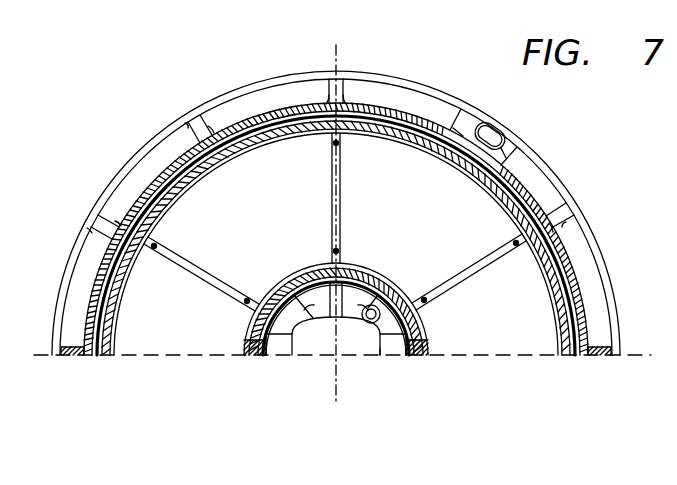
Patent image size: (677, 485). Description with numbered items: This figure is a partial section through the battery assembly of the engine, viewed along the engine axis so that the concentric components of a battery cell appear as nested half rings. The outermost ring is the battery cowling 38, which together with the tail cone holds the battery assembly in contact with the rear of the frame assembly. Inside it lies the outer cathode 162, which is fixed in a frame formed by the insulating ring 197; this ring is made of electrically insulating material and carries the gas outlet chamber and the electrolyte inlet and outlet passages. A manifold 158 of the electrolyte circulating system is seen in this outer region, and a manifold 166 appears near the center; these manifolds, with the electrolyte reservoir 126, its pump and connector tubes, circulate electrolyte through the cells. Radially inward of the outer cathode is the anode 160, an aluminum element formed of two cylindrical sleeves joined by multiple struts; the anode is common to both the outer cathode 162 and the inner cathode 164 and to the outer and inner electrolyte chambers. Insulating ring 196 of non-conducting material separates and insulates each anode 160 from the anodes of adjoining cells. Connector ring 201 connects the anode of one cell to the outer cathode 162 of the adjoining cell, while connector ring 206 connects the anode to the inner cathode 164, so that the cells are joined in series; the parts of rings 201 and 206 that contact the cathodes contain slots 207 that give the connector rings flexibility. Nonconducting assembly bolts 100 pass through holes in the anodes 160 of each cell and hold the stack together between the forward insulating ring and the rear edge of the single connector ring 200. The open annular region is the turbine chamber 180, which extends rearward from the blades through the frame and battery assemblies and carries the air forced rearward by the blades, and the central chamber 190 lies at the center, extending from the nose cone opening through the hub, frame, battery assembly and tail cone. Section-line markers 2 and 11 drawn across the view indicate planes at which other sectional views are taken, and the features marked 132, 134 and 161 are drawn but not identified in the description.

The section line 2- 2 is at (335, 45).
The section line 11- 11 is at (183, 81).
The battery cowling 38 is at (146, 129).
The assembly bolts 100 is at (190, 232).
The electrolyte reservoir 126 is at (286, 342).
The shaft seat 132 is at (370, 344).
The hub bore 134 is at (312, 342).
The manifold 158 is at (485, 114).
The anode 160 is at (205, 144).
The inner ring web 161 is at (185, 250).
The outer cathode 162 is at (90, 352).
The inner cathode 164 is at (259, 267).
The manifold 166 is at (405, 334).
The turbine chamber 180 is at (309, 185).
The central chamber 190 is at (309, 282).
The insulating ring 196 is at (469, 159).
The insulating ring 197 is at (90, 205).
The connector ring 200 is at (519, 178).
The connector ring 201 is at (255, 96).
The connector ring 206 is at (365, 275).
The slots 207 is at (284, 102).